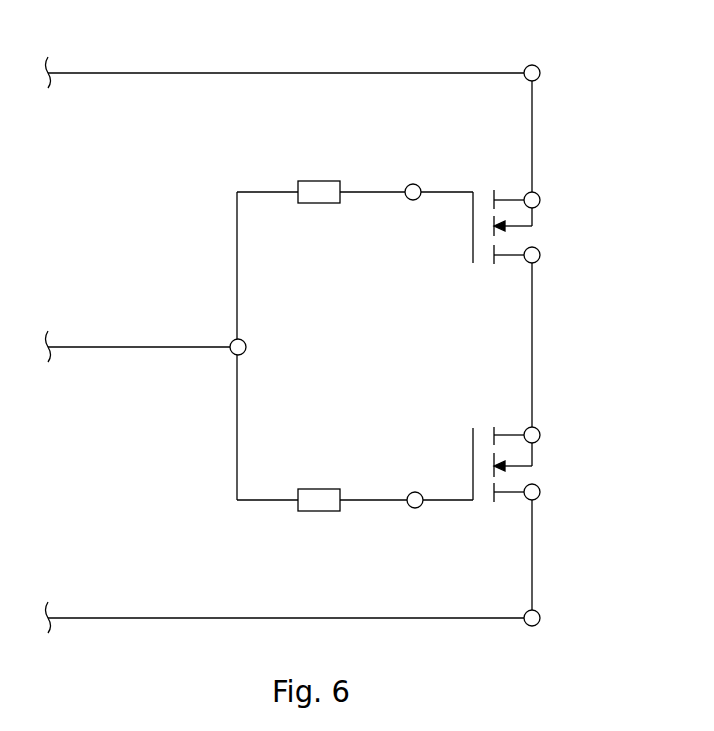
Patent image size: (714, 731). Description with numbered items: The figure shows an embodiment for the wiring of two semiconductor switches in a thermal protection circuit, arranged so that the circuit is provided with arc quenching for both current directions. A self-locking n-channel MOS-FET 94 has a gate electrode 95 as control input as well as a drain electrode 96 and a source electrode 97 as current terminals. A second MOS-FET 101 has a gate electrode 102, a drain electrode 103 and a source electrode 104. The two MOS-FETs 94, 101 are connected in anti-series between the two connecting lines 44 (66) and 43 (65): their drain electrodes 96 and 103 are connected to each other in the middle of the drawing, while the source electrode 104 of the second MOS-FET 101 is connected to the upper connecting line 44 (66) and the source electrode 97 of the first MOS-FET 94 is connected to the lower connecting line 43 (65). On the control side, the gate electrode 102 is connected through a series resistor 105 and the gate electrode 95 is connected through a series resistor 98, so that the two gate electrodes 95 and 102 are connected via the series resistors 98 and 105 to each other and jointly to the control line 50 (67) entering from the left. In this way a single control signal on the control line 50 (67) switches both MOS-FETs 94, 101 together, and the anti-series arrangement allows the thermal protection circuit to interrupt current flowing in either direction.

The connecting line 44 is at (293, 58).
The connecting line 66 is at (88, 73).
The control line 50 is at (146, 330).
The control line 67 is at (88, 347).
The connecting line 43 is at (293, 604).
The connecting line 65 is at (88, 618).
The second MOS-FET 101 is at (537, 254).
The gate electrode 102 is at (419, 186).
The drain electrode 103 is at (538, 261).
The source electrode 104 is at (538, 194).
The series resistor 105 is at (330, 203).
The self-locking n-channel MOS-FET 94 is at (535, 493).
The gate electrode 95 is at (421, 506).
The drain electrode 96 is at (538, 429).
The source electrode 97 is at (538, 498).
The series resistor 98 is at (328, 512).